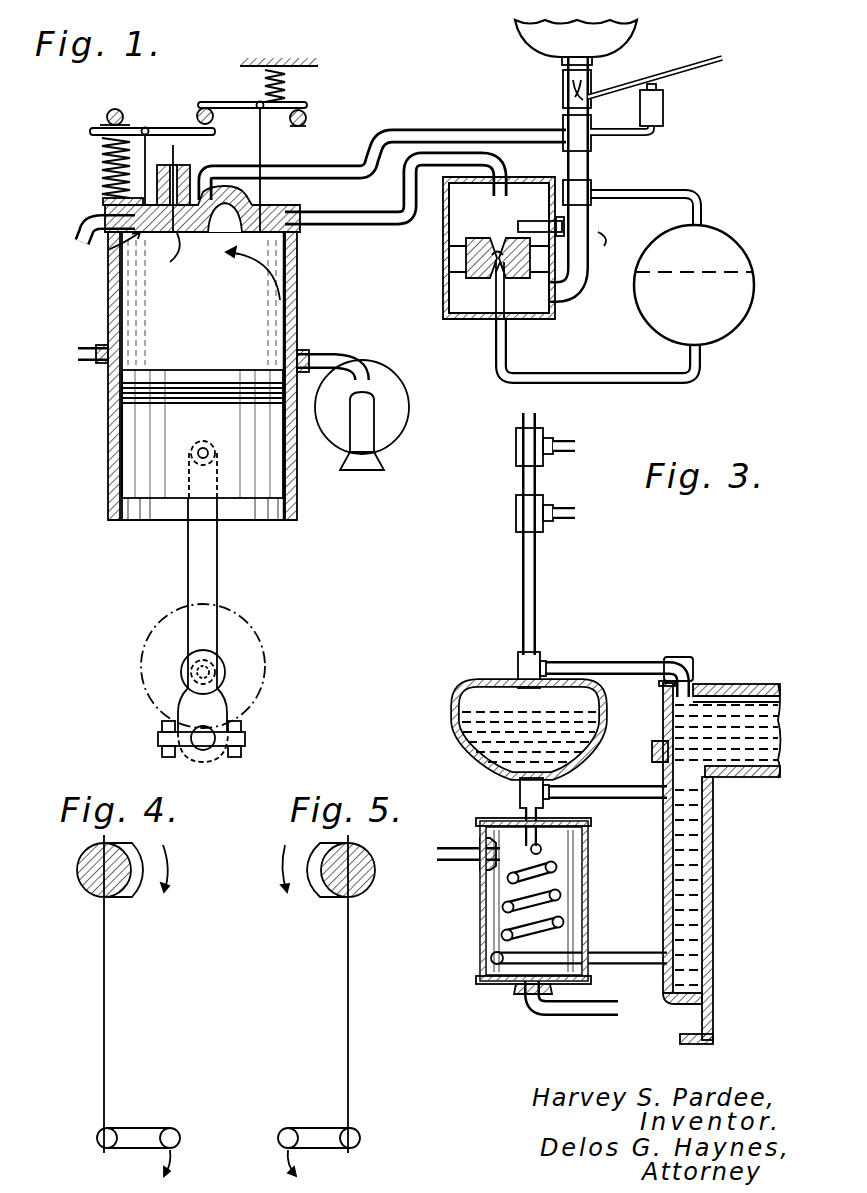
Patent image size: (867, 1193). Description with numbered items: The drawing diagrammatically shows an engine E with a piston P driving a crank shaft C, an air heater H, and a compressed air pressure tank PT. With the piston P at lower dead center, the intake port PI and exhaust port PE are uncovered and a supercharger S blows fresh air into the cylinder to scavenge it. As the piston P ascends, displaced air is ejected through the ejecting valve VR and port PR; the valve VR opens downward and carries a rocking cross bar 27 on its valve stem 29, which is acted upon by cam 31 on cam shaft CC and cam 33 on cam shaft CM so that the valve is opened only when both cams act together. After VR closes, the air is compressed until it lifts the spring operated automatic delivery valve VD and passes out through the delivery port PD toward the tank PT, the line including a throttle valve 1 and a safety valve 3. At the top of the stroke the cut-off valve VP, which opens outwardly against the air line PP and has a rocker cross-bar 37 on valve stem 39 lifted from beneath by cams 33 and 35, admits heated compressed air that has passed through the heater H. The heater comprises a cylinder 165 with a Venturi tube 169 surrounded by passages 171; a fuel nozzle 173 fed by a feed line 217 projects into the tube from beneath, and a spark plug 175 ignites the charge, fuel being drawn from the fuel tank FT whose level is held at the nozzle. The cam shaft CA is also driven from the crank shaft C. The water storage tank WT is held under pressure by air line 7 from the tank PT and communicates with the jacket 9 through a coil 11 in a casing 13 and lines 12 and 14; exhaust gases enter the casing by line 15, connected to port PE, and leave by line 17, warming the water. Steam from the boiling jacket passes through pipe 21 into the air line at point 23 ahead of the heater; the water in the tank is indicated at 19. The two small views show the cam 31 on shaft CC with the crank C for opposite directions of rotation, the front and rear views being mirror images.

In FIG. 1, the throttle valve 1 is at (565, 92).
In FIG. 1, the safety valve 3 is at (665, 105).
In FIG. 3, the air line 7 is at (537, 584).
In FIG. 3, the jacket 9 is at (672, 815).
In FIG. 3, the coil 11 is at (575, 890).
In FIG. 3, the line 12 is at (620, 955).
In FIG. 3, the casing 13 is at (480, 916).
In FIG. 3, the line 14 is at (606, 786).
In FIG. 3, the line 15 is at (606, 1012).
In FIG. 3, the line 17 is at (446, 850).
In FIG. 3, the water 19 is at (462, 742).
In FIG. 3, the pipe 21 is at (612, 664).
In FIG. 3, the steam entry point 23 is at (518, 450).
In FIG. 1, the rocking cross bar 27 is at (150, 127).
In FIG. 1, the valve stem 29 is at (130, 157).
In FIG. 1, the cam 31 is at (100, 126).
In FIG. 4, the cam 31 is at (136, 894).
In FIG. 5, the cam 31 is at (318, 896).
In FIG. 1, the cam 33 is at (200, 110).
In FIG. 1, the cam 35 is at (306, 123).
In FIG. 1, the rocker cross-bar 37 is at (232, 102).
In FIG. 1, the valve stem 39 is at (263, 152).
In FIG. 1, the cylinder 165 is at (499, 248).
In FIG. 1, the Venturi tube 169 is at (478, 270).
In FIG. 1, the passages 171 is at (466, 262).
In FIG. 1, the fuel nozzle 173 is at (502, 286).
In FIG. 1, the spark plug 175 is at (594, 226).
In FIG. 1, the feed line 217 is at (506, 362).
In FIG. 1, the cam shaft CC is at (108, 112).
In FIG. 4, the cam shaft CC is at (90, 892).
In FIG. 5, the cam shaft CC is at (374, 870).
In FIG. 1, the cam shaft CM is at (208, 108).
In FIG. 1, the cam shaft CA is at (305, 114).
In FIG. 1, the delivery port PD is at (176, 182).
In FIG. 3, the delivery port PD is at (578, 516).
In FIG. 1, the port PR is at (86, 238).
In FIG. 1, the ejecting valve VR is at (108, 250).
In FIG. 1, the automatic delivery valve VD is at (200, 258).
In FIG. 1, the cut-off valve VP is at (202, 246).
In FIG. 1, the engine E is at (305, 304).
In FIG. 1, the air line PP is at (298, 222).
In FIG. 1, the intake port PI is at (306, 352).
In FIG. 1, the exhaust port PE is at (82, 361).
In FIG. 1, the piston P is at (202, 445).
In FIG. 1, the supercharger S is at (362, 415).
In FIG. 1, the crank shaft C is at (218, 684).
In FIG. 4, the crank shaft C is at (110, 1133).
In FIG. 5, the crank shaft C is at (355, 1133).
In FIG. 1, the air heater H is at (434, 249).
In FIG. 1, the fuel tank FT is at (672, 269).
In FIG. 1, the pressure tank PT is at (576, 38).
In FIG. 3, the water storage tank WT is at (482, 706).